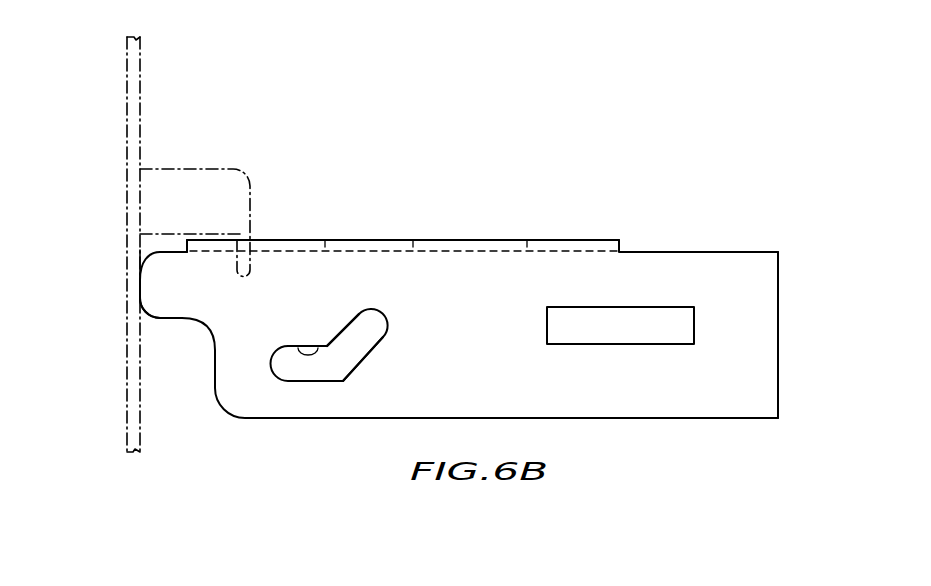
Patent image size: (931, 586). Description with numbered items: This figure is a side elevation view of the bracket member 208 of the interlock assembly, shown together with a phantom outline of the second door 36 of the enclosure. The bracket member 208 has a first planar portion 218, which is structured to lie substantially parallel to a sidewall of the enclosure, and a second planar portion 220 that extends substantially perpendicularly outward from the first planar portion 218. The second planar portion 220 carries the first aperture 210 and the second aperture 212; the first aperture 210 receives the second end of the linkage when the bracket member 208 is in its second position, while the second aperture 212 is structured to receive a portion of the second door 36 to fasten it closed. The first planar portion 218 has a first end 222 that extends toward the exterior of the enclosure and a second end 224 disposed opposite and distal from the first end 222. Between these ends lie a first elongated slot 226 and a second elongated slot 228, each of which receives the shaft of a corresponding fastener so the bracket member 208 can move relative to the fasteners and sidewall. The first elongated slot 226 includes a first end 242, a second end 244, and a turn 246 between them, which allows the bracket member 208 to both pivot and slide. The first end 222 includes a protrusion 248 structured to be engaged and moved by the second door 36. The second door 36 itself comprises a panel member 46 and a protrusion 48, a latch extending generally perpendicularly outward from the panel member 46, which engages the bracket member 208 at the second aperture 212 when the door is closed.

The second door 36 is at (118, 99).
The panel member 46 is at (126, 273).
The protrusion 48 is at (253, 190).
The bracket member 208 is at (653, 436).
The first aperture 210 is at (526, 240).
The second aperture 212 is at (325, 240).
The first planar portion 218 is at (500, 345).
The second planar portion 220 is at (365, 240).
The first end 222 is at (134, 238).
The second end 224 is at (779, 440).
The first elongated slot 226 is at (318, 347).
The second elongated slot 228 is at (588, 344).
The first end 242 is at (268, 396).
The second end 244 is at (394, 300).
The turn 246 is at (343, 381).
The protrusion 248 is at (141, 283).